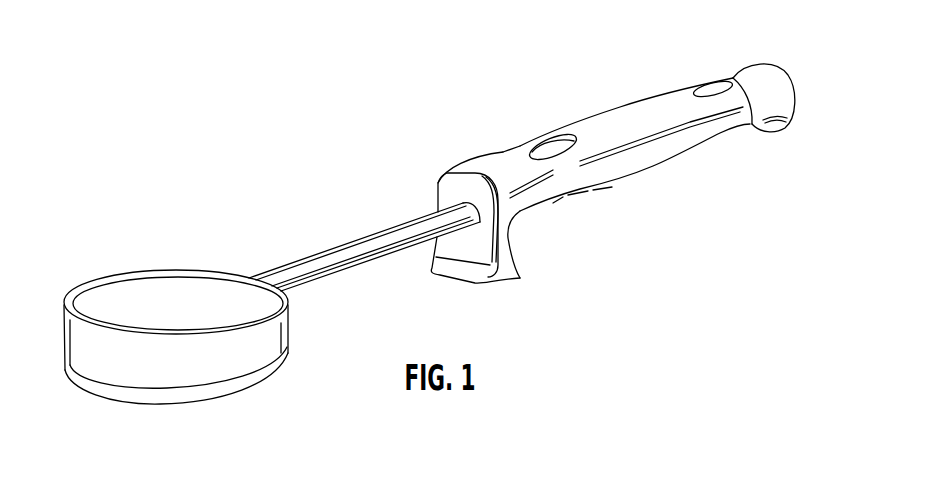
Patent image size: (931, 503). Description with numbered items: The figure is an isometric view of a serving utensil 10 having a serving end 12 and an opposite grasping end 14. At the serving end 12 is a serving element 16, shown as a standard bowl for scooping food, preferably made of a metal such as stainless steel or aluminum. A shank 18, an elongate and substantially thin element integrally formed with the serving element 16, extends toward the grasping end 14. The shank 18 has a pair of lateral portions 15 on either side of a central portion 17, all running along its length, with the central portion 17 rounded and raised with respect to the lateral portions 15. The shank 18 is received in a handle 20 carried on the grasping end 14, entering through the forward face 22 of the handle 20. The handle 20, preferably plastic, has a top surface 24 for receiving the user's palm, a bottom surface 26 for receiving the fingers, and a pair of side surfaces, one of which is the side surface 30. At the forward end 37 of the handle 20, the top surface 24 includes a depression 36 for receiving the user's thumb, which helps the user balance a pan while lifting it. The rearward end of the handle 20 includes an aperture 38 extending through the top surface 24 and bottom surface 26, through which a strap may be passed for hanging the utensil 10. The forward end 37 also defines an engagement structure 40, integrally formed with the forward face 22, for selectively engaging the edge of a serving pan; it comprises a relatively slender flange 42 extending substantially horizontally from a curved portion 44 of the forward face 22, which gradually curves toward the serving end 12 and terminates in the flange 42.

The serving utensil 10 is at (420, 222).
The serving end 12 is at (166, 320).
The grasping end 14 is at (591, 176).
The lateral portions 15 is at (364, 269).
The serving element 16 is at (188, 368).
The central portion 17 is at (285, 264).
The shank 18 is at (348, 260).
The handle 20 is at (650, 154).
The forward face 22 is at (462, 222).
The top surface 24 is at (519, 264).
The bottom surface 26 is at (658, 163).
The side surface 30 is at (620, 164).
The depression 36 is at (536, 147).
The forward end 37 is at (464, 156).
The aperture 38 is at (722, 81).
The engagement structure 40 is at (497, 298).
The flange 42 is at (430, 273).
The curved portion 44 is at (468, 240).